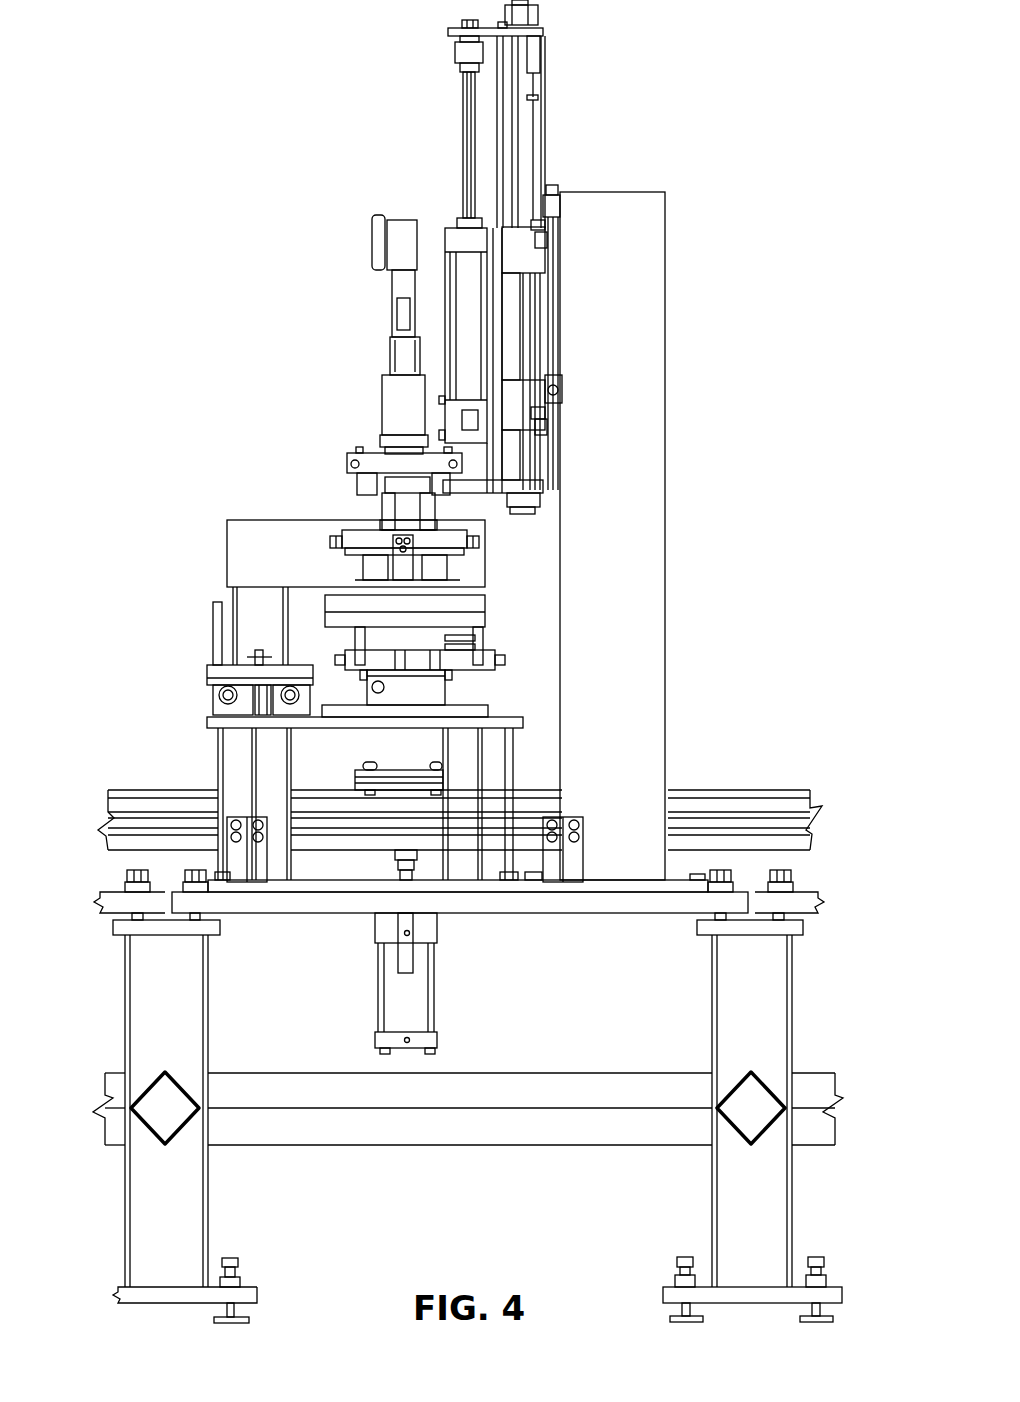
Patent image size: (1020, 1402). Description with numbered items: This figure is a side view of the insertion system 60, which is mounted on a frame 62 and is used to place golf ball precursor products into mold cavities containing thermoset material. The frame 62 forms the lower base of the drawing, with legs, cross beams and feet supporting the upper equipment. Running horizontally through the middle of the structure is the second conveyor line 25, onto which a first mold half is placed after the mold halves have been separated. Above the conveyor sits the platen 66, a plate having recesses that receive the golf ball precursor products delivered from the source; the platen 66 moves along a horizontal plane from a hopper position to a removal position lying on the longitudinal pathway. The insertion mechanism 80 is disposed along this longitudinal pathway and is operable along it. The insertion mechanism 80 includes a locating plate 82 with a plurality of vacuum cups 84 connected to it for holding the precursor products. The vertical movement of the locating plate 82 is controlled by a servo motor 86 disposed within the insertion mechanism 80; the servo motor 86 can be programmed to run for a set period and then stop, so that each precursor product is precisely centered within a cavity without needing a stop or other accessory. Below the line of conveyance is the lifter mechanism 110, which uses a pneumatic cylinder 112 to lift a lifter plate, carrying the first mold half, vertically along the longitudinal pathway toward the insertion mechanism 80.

The second conveyor line 25 is at (158, 779).
The insertion system 60 is at (652, 78).
The frame 62 is at (765, 980).
The platen 66 is at (330, 606).
The insertion mechanism 80 is at (313, 427).
The locating plate 82 is at (372, 535).
The vacuum cups 84 is at (370, 568).
The servo motor 86 is at (388, 311).
The lifter mechanism 110 is at (468, 994).
The pneumatic cylinder 112 is at (395, 999).